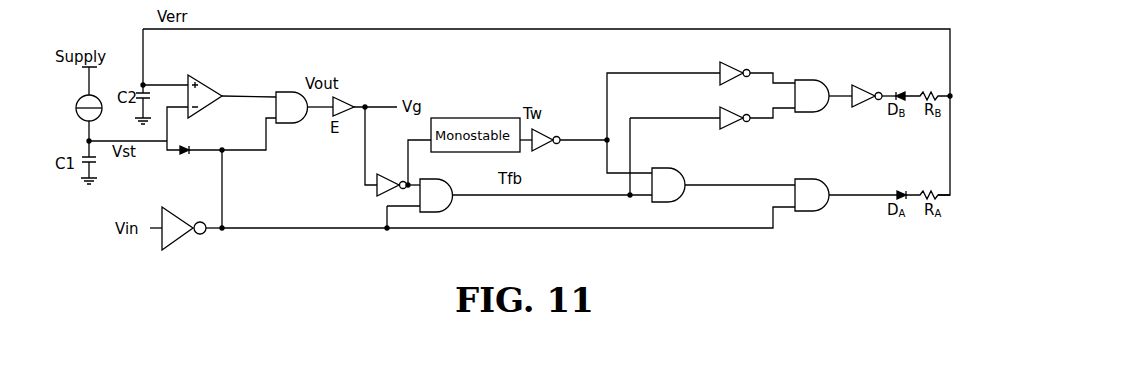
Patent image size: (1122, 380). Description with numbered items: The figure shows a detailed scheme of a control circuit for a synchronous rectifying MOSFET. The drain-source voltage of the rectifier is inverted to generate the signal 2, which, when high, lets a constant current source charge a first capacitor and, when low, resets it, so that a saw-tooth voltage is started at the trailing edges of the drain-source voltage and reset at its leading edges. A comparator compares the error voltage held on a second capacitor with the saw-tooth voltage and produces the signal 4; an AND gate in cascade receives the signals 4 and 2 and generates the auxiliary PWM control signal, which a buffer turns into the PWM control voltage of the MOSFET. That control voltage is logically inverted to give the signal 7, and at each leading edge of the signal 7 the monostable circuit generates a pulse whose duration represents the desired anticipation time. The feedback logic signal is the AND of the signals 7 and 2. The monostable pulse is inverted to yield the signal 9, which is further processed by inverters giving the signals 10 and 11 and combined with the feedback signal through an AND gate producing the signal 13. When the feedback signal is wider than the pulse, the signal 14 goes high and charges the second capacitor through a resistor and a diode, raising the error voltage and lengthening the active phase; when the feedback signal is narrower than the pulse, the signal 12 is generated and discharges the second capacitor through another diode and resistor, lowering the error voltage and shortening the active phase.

The inverted drain-source voltage signal 2 is at (198, 231).
The comparator output signal 4 is at (223, 95).
The inverted PWM control voltage 7 is at (420, 184).
The inverted monostable pulse 9 is at (570, 135).
The first comparison inverter output 10 is at (757, 67).
The second comparison inverter output 11 is at (757, 123).
The discharge signal 12 is at (845, 89).
The intermediate AND signal 13 is at (723, 181).
The charge signal 14 is at (846, 191).